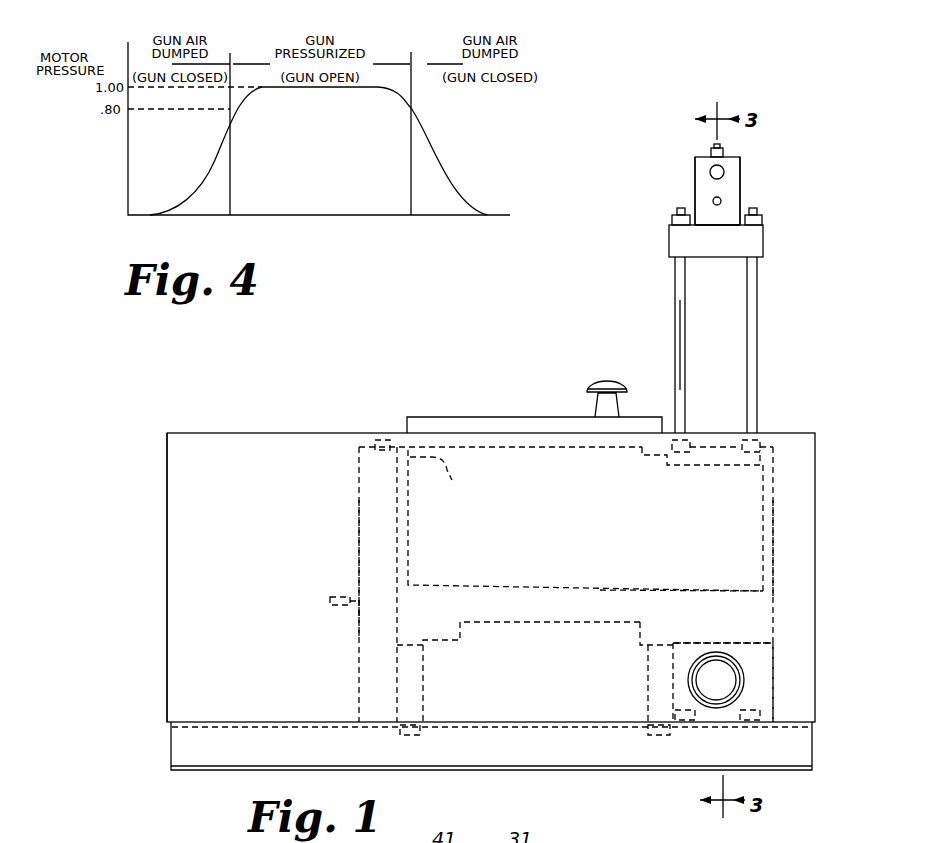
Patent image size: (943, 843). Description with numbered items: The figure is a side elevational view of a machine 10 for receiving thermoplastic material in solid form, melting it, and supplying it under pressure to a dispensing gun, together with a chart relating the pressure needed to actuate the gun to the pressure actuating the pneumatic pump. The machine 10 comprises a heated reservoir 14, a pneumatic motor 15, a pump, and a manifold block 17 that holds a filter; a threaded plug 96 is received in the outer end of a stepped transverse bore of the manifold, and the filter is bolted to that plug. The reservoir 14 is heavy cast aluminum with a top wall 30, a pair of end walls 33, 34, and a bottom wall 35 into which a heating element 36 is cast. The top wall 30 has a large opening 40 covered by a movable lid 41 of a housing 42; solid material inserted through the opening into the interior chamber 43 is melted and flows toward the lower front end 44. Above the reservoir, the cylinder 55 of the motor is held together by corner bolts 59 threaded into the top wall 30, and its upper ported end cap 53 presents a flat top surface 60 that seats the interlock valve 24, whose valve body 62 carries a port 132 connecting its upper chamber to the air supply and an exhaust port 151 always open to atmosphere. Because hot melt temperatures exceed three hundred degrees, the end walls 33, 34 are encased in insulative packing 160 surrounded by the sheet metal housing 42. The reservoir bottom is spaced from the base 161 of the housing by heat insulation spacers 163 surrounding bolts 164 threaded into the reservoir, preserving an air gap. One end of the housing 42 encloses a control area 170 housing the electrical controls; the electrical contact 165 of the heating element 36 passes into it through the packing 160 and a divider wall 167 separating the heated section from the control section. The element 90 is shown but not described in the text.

The machine 10 is at (552, 347).
The heated reservoir 14 is at (775, 533).
The pneumatic motor 15 is at (765, 330).
The manifold block 17 is at (778, 677).
The interlock valve 24 is at (750, 176).
The top wall 30 is at (765, 455).
The end wall 33 is at (770, 563).
The end wall 34 is at (397, 523).
The bottom wall 35 is at (585, 608).
The heating element 36 is at (345, 610).
The opening 40 is at (450, 478).
The movable lid 41 is at (533, 402).
The housing 42 is at (372, 432).
The interior chamber 43 is at (575, 530).
The lower front end 44 is at (725, 590).
The upper ported end cap 53 is at (763, 242).
The cylinder 55 is at (717, 345).
The corner bolts 59 is at (678, 277).
The flat top surface 60 is at (716, 224).
The valve body 62 is at (735, 165).
The motor mount 90 is at (748, 722).
The threaded plug 96 is at (716, 675).
The port 132 is at (710, 172).
The exhaust port 151 is at (712, 198).
The insulative packing 160 is at (400, 437).
The base 161 is at (195, 746).
The heat insulation spacers 163 is at (423, 695).
The bolts 164 is at (412, 738).
The electrical contact 165 is at (333, 602).
The divider wall 167 is at (359, 562).
The control area 170 is at (262, 468).